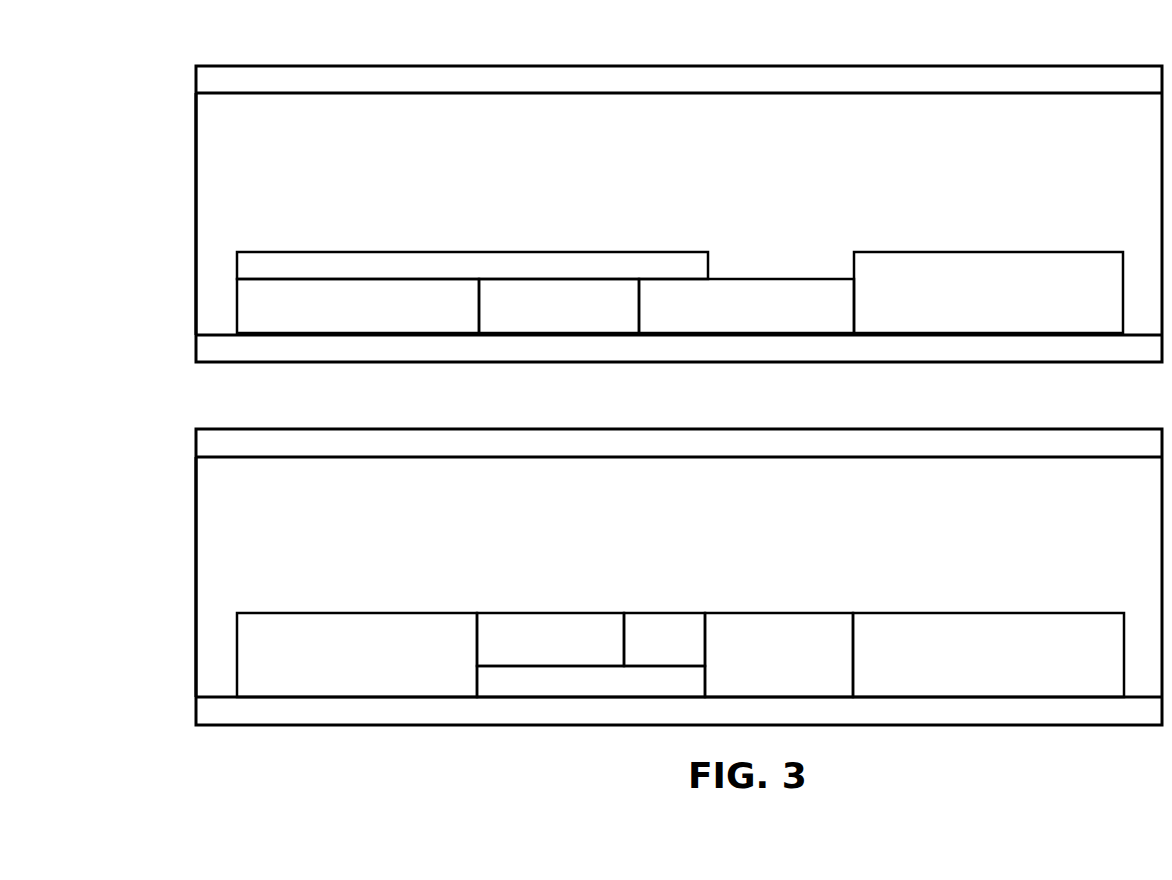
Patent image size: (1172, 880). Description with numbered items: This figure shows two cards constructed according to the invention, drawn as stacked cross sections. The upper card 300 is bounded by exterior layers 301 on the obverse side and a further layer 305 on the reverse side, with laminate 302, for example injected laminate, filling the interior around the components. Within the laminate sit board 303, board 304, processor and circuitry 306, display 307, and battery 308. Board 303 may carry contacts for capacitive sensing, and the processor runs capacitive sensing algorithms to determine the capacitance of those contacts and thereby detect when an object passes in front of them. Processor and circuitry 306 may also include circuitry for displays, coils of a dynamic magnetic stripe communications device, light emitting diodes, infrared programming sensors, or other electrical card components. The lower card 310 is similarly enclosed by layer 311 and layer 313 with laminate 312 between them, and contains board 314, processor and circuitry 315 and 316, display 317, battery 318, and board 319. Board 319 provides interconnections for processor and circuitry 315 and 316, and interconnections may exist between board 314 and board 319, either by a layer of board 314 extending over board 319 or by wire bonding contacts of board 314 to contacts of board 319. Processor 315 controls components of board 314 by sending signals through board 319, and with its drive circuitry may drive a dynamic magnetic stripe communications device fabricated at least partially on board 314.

The card 300 is at (663, 53).
The layers 301 is at (201, 89).
The laminate 302 is at (206, 199).
The board 303 is at (250, 266).
The board 304 is at (237, 302).
The exterior layer (reverse side) 305 is at (203, 361).
The processor and circuitry 306 is at (500, 303).
The display 307 is at (800, 279).
The battery 308 is at (988, 252).
The card 310 is at (670, 415).
The layer 311 is at (201, 452).
The laminate 312 is at (210, 533).
The layer 313 is at (210, 720).
The board 314 is at (291, 613).
The processor and circuitry 315 is at (522, 613).
The circuitry 316 is at (681, 613).
The display 317 is at (790, 613).
The battery 318 is at (961, 613).
The board 319 is at (493, 692).